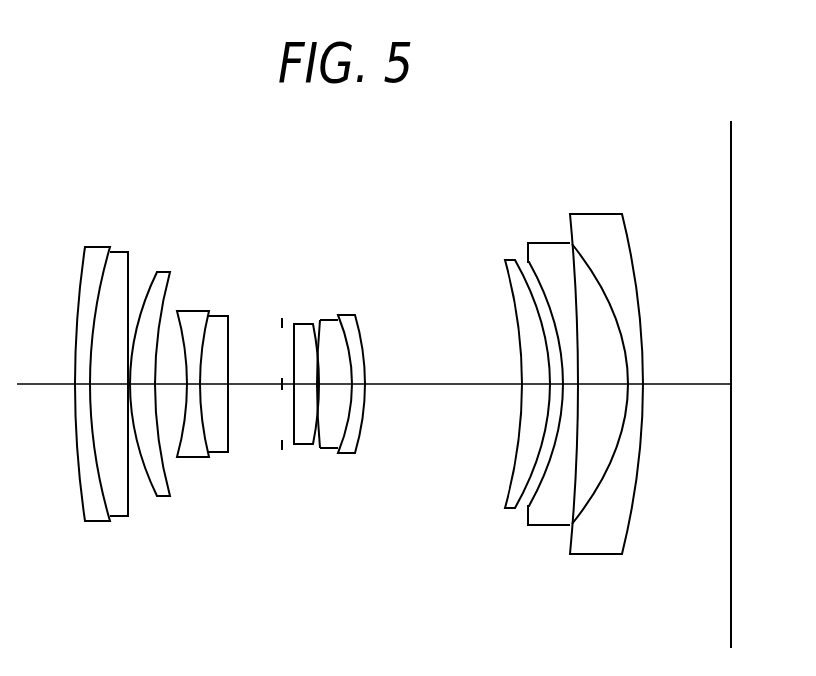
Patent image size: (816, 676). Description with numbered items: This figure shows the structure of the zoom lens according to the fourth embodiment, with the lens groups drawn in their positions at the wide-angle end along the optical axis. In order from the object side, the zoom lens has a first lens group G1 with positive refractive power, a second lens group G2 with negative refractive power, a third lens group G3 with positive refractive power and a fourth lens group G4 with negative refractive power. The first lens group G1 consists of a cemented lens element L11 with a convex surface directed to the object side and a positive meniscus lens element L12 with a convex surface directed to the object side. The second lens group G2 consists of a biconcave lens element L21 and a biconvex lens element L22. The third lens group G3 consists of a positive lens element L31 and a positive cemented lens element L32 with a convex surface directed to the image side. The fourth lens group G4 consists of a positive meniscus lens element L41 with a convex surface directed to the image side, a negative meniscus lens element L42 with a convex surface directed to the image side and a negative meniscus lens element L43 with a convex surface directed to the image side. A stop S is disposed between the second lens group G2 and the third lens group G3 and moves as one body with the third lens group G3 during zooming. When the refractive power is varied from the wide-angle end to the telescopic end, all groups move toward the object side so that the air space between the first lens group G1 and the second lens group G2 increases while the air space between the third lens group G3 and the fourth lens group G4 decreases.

The first lens group G1 is at (175, 243).
The second lens group G2 is at (242, 243).
The third lens group G3 is at (373, 244).
The fourth lens group G4 is at (647, 215).
The stop S is at (280, 312).
The cemented lens element L11 is at (97, 513).
The positive meniscus lens element L12 is at (162, 497).
The biconcave lens element L21 is at (195, 450).
The biconvex lens element L22 is at (218, 450).
The positive lens element L31 is at (302, 447).
The positive cemented lens element L32 is at (345, 452).
The positive meniscus lens element L41 is at (510, 502).
The negative meniscus lens element L42 is at (550, 513).
The negative meniscus lens element L43 is at (595, 542).